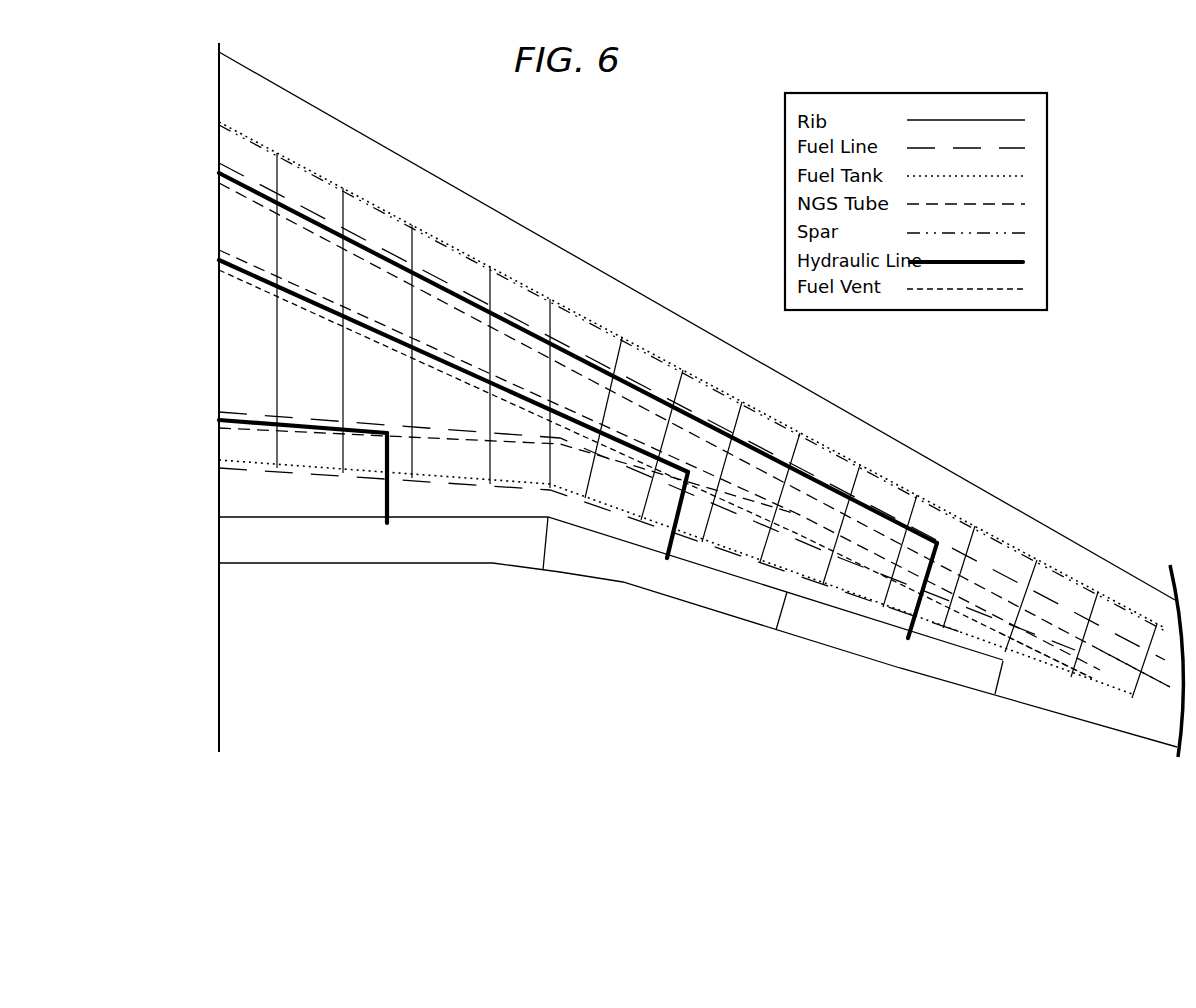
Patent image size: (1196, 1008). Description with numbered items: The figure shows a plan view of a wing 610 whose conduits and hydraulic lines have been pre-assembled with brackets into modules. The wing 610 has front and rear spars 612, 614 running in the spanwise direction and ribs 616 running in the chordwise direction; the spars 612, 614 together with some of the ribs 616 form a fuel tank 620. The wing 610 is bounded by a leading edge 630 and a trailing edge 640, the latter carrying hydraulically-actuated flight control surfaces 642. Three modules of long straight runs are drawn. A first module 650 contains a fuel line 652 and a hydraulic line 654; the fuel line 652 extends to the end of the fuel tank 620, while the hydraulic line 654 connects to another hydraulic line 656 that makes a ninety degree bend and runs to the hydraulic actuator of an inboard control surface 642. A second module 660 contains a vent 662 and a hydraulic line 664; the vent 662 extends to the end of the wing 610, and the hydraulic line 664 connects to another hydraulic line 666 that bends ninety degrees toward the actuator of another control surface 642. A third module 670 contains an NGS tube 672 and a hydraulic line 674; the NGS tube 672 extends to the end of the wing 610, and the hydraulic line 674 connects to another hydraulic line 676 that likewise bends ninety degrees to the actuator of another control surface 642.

The wing 610 is at (701, 400).
The front spar 612 is at (950, 508).
The rear spar 614 is at (1092, 680).
The ribs 616 is at (1138, 683).
The fuel tank 620 is at (1015, 552).
The leading edge 630 is at (875, 427).
The trailing edge 640 is at (1017, 695).
The flight control surfaces 642 is at (332, 564).
The first module 650 is at (279, 463).
The fuel line 652 is at (249, 416).
The hydraulic line 654 is at (249, 416).
The hydraulic line 656 is at (386, 502).
The second module 660 is at (430, 399).
The vent 662 is at (248, 258).
The hydraulic line 664 is at (248, 258).
The hydraulic line 666 is at (668, 541).
The third module 670 is at (554, 399).
The NGS tube 672 is at (248, 170).
The hydraulic line 674 is at (248, 170).
The hydraulic line 676 is at (907, 624).